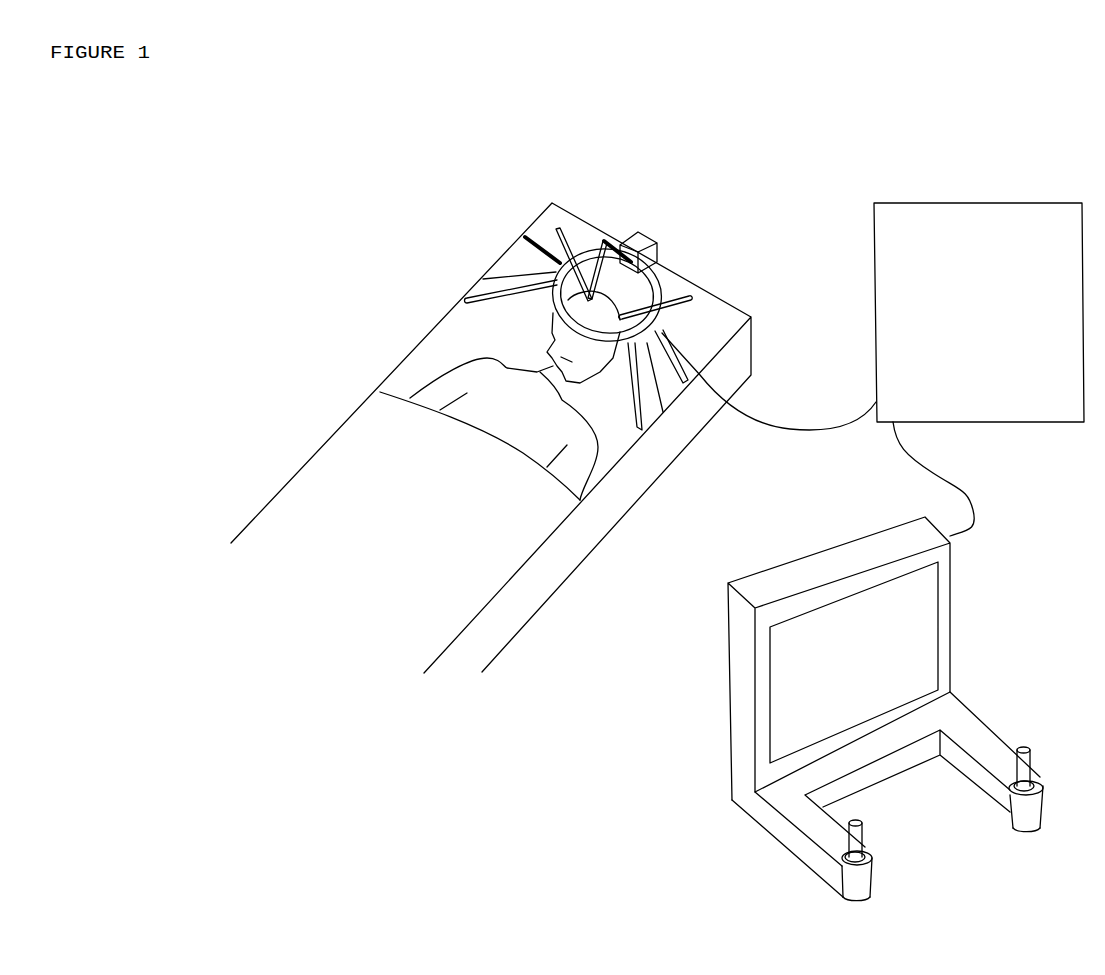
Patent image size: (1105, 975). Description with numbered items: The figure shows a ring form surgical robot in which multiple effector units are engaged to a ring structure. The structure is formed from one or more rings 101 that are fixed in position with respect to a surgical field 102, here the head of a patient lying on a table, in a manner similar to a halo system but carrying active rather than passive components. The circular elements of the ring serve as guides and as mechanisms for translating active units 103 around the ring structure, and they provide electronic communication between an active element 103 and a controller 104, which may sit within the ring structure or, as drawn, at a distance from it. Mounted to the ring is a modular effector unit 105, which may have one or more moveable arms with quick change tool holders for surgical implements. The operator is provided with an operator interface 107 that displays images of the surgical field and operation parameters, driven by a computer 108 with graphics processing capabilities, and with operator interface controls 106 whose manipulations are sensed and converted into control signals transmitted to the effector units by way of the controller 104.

The ring 101 is at (675, 284).
The surgical field 102 is at (491, 438).
The active unit 103 is at (676, 292).
The controller 104 is at (874, 325).
The modular effector unit 105 is at (646, 236).
The operator interface control system 106 is at (990, 730).
The operator interface 107 is at (780, 683).
The computer 108 is at (730, 762).